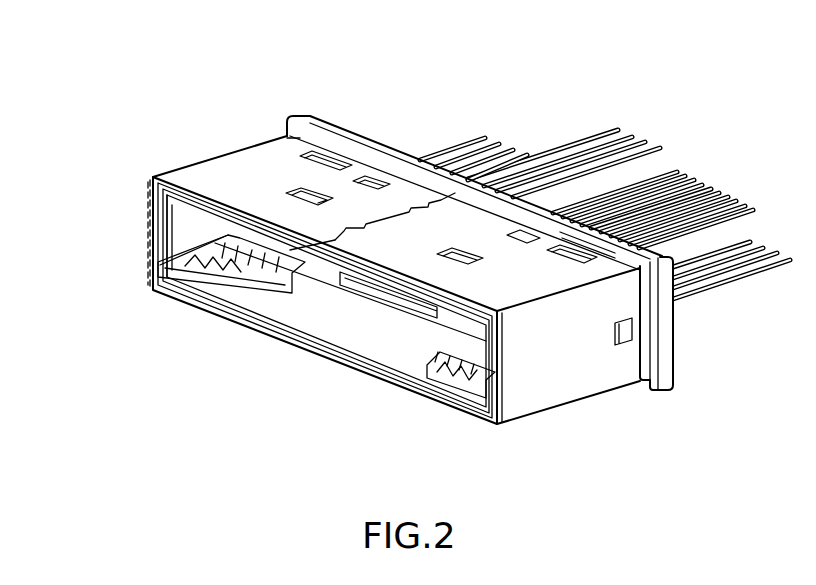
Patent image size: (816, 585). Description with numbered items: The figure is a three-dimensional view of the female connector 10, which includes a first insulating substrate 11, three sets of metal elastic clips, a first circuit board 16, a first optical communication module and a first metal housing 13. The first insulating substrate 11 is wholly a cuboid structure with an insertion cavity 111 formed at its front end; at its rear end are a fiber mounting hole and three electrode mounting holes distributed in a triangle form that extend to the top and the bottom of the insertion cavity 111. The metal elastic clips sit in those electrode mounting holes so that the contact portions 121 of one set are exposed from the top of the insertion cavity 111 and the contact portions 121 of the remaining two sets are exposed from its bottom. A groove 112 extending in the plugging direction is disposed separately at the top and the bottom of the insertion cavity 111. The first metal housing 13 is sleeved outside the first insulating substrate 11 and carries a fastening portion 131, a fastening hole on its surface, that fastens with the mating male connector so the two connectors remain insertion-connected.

The female connector 10 is at (198, 61).
The first insulating substrate 11 is at (255, 327).
The insertion cavity 111 is at (178, 236).
The groove 112 is at (397, 350).
The contact portions 121 is at (205, 262).
The first metal housing 13 is at (306, 352).
The fastening portion 131 is at (313, 190).
The first circuit board 16 is at (674, 343).